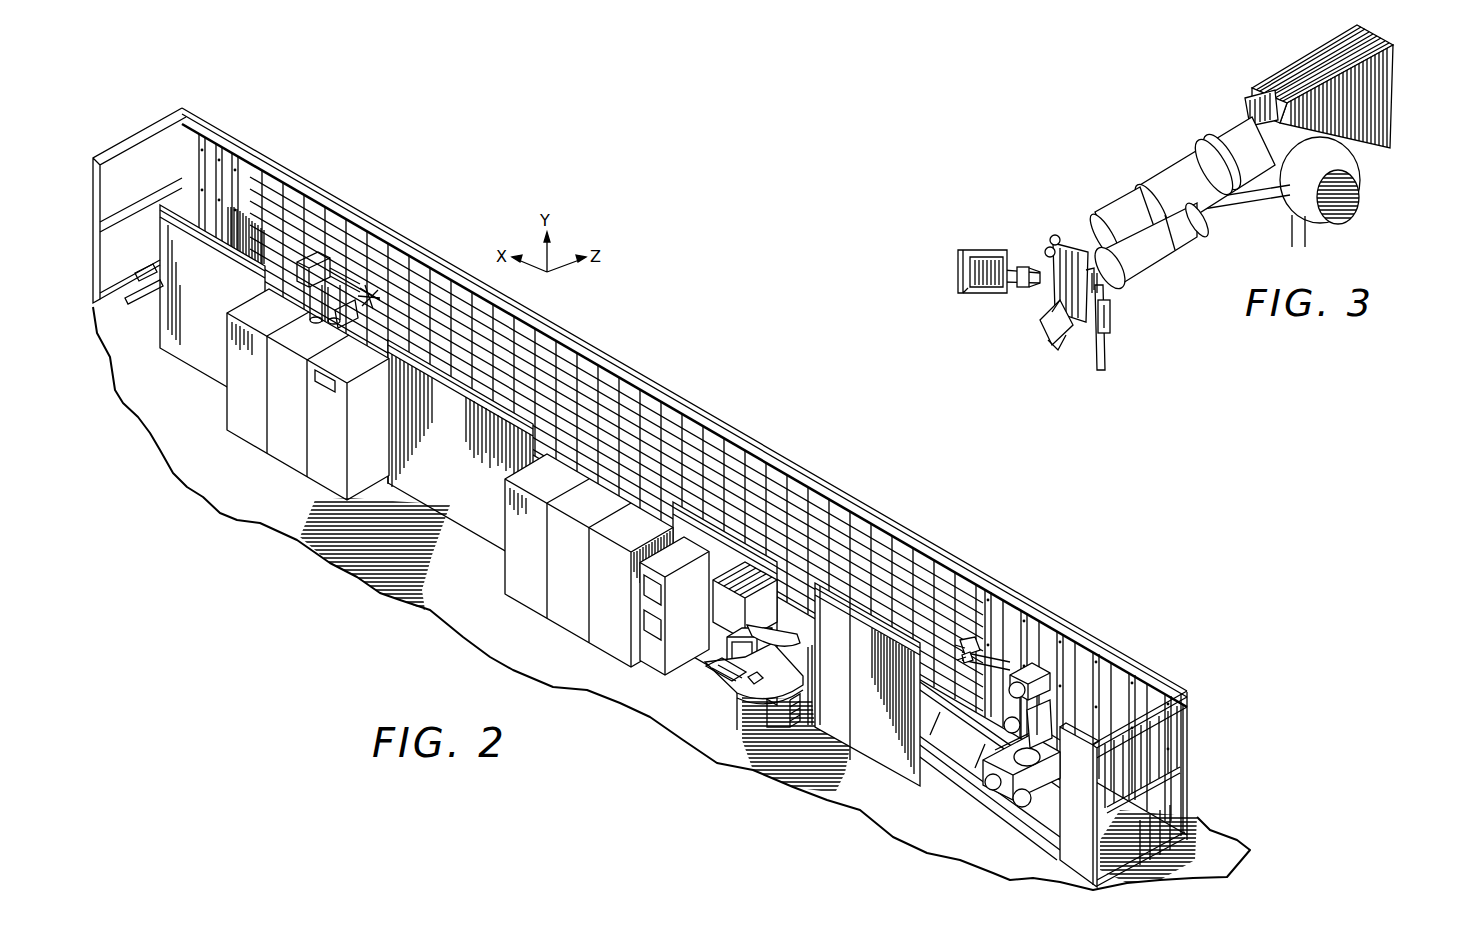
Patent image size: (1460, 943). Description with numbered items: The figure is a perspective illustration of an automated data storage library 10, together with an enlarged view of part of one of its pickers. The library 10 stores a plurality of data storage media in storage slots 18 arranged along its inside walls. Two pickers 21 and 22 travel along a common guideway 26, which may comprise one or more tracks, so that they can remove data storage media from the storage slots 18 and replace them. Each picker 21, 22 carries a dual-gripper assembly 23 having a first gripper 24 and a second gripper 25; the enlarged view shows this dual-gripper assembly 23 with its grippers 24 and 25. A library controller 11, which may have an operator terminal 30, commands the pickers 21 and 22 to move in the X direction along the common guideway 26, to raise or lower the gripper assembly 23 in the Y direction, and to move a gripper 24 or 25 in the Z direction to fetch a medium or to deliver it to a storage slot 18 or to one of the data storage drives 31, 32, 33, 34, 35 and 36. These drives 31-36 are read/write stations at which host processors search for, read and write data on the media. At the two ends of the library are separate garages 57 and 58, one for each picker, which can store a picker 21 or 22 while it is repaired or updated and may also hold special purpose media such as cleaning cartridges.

In FIG. 2, the automated data storage library 10 is at (684, 407).
In FIG. 2, the library controller 11 is at (671, 598).
In FIG. 2, the storage slots 18 is at (684, 484).
In FIG. 2, the picker 21 is at (338, 234).
In FIG. 3, the picker 21 is at (1265, 159).
In FIG. 2, the picker 22 is at (1036, 697).
In FIG. 2, the dual-gripper assembly 23 is at (987, 609).
In FIG. 3, the dual-gripper assembly 23 is at (1042, 255).
In FIG. 3, the first gripper 24 is at (970, 269).
In FIG. 3, the second gripper 25 is at (1126, 324).
In FIG. 2, the common guideway 26 is at (977, 764).
In FIG. 2, the operator terminal 30 is at (726, 638).
In FIG. 2, the data storage drive 31 is at (292, 394).
In FIG. 2, the data storage drive 32 is at (273, 400).
In FIG. 2, the data storage drive 33 is at (313, 422).
In FIG. 2, the data storage drive 34 is at (562, 560).
In FIG. 2, the data storage drive 35 is at (553, 564).
In FIG. 2, the data storage drive 36 is at (593, 587).
In FIG. 2, the garage 57 is at (165, 187).
In FIG. 2, the garage 58 is at (1123, 751).